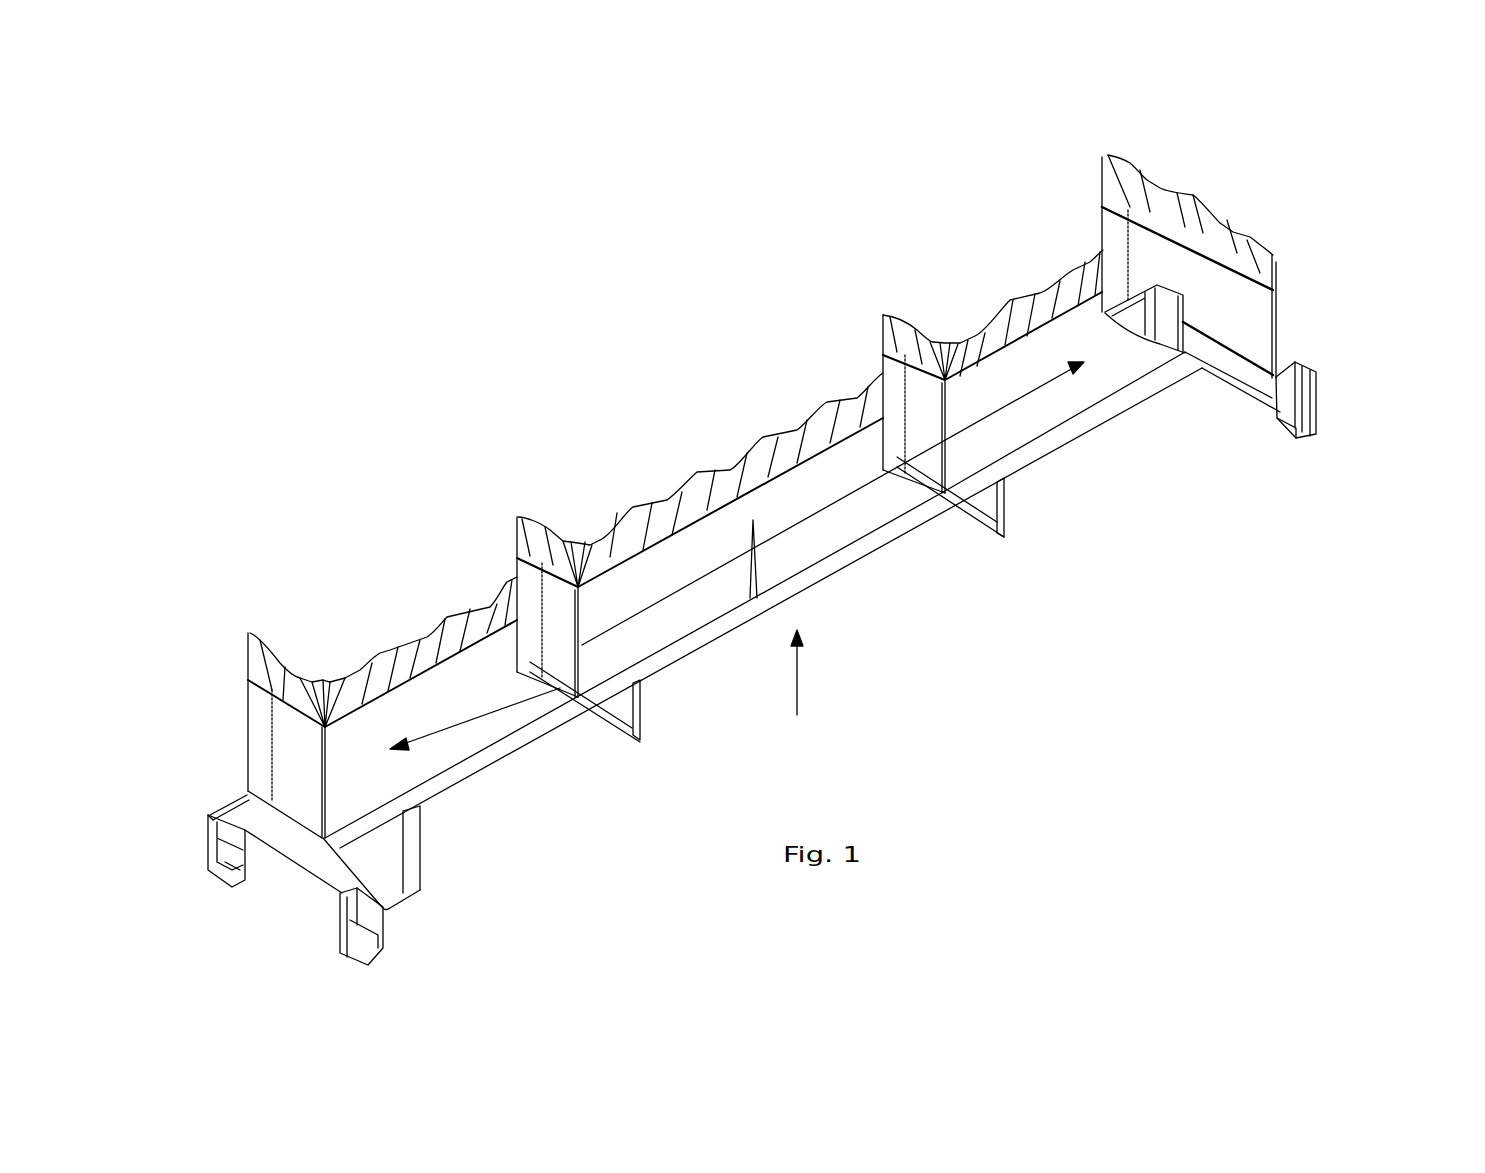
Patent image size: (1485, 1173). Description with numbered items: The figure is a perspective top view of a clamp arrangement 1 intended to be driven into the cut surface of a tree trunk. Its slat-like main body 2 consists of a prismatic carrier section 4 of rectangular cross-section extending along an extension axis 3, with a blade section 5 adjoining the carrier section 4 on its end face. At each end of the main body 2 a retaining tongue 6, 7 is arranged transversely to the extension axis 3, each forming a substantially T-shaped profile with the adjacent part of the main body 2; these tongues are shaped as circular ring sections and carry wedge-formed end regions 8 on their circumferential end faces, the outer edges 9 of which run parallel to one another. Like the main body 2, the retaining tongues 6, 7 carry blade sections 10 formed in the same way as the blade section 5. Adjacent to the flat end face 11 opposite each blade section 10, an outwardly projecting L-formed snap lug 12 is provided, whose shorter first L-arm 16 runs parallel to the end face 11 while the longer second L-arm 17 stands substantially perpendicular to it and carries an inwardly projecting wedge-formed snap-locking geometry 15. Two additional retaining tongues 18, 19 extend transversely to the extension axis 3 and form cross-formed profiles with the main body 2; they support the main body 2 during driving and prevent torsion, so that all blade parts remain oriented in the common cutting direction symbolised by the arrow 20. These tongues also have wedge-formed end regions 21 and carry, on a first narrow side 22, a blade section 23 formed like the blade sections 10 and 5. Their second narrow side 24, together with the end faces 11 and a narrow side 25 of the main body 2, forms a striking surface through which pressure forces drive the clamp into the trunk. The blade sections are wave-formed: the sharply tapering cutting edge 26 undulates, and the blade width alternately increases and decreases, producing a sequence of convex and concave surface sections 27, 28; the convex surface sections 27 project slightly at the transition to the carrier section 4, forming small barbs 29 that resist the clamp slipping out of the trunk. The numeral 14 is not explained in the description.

The clamp arrangement 1 is at (540, 312).
The main body 2 is at (1052, 402).
The extension axis 3 is at (812, 520).
The carrier section 4 is at (420, 700).
The blade section 5 is at (699, 497).
The retaining tongue 6 is at (295, 748).
The retaining tongue 7 is at (1165, 258).
The wedge-formed end region 8 is at (262, 780).
The outer edge 9 is at (255, 690).
The blade section 10 is at (295, 690).
The end face 11 is at (298, 850).
The snap lug 12 is at (390, 941).
The spike tab 14 is at (628, 570).
The snap-locking geometry 15 is at (227, 872).
The first L-arm 16 is at (222, 812).
The second L-arm 17 is at (208, 845).
The retaining tongue 18 is at (550, 618).
The retaining tongue 19 is at (917, 410).
The arrow 20 is at (800, 690).
The wedge-formed end region 21 is at (528, 652).
The first narrow side 22 is at (565, 532).
The blade section 23 is at (548, 535).
The second narrow side 24 is at (612, 725).
The narrow side 25 is at (1128, 402).
The cutting edge 26 is at (762, 437).
The convex surface section 27 is at (1012, 297).
The concave surface section 28 is at (478, 623).
The barb 29 is at (452, 665).